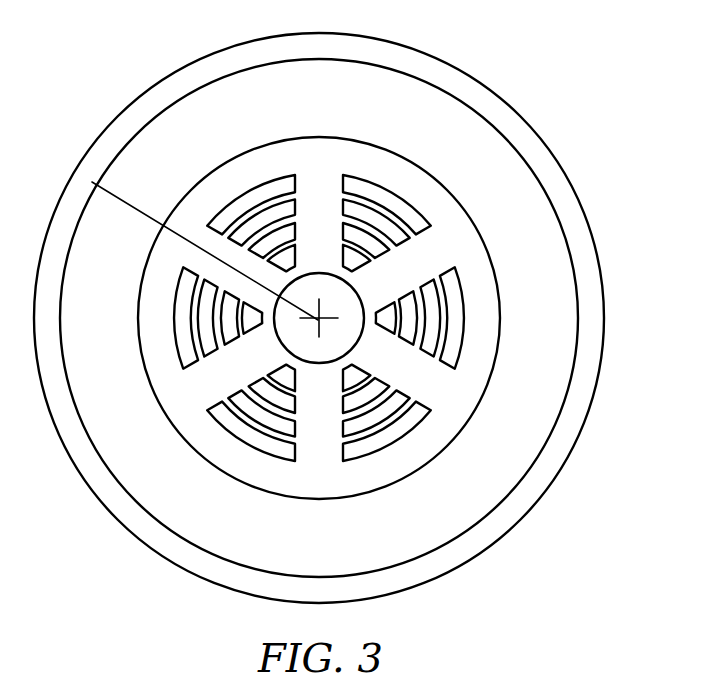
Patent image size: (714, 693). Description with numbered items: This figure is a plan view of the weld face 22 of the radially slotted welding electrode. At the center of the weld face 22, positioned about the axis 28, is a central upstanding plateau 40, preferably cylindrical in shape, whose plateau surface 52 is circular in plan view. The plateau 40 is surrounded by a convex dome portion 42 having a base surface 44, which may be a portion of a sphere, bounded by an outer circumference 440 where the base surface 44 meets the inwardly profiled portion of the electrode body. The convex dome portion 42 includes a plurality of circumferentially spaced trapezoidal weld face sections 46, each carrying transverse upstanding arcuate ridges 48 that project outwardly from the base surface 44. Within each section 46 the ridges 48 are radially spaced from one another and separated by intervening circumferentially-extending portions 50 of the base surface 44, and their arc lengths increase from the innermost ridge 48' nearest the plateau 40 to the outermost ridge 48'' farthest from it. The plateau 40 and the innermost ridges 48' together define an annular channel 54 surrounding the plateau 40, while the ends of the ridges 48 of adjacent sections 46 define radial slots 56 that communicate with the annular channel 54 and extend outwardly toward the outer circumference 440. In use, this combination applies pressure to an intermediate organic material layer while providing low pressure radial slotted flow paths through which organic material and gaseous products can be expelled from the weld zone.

The weld face 22 is at (357, 123).
The axis 28 is at (92, 182).
The central upstanding plateau 40 is at (342, 303).
The convex dome portion 42 is at (240, 180).
The base surface 44 is at (212, 198).
The trapezoidal weld face sections 46 is at (351, 302).
The transverse upstanding arcuate ridges 48 is at (511, 339).
The innermost ridge 48' is at (303, 236).
The outermost ridge 48'' is at (282, 190).
The circumferentially-extending portions 50 is at (393, 240).
The plateau surface 52 is at (355, 345).
The annular channel 54 is at (269, 320).
The radial slots 56 is at (323, 440).
The outer circumference 440 is at (302, 137).